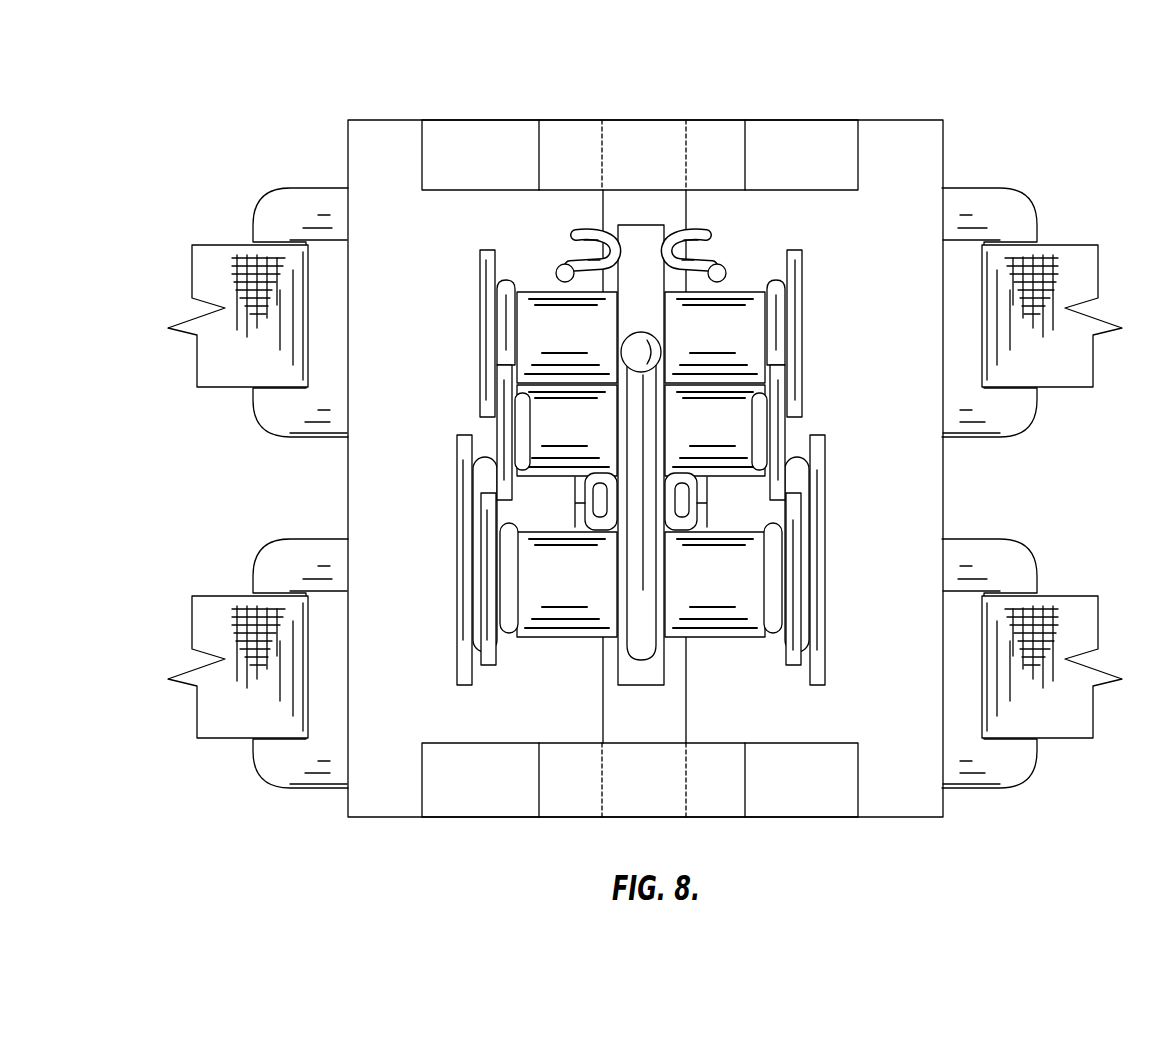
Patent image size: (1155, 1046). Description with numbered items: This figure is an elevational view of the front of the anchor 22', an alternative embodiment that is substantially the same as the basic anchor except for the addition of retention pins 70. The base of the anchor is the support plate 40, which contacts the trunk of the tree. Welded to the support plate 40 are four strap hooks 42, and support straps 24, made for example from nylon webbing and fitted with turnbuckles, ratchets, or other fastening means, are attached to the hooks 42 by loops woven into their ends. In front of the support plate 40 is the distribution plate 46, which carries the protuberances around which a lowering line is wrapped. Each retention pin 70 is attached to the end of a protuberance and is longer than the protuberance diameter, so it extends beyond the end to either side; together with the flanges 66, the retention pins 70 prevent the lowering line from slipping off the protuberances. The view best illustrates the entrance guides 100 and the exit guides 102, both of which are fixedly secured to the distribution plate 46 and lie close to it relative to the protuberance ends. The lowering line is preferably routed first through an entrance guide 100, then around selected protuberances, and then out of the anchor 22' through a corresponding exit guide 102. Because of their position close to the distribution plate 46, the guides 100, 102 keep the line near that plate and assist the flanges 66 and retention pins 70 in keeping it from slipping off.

The anchor 22' is at (640, 413).
The support plate 40 is at (392, 157).
The strap hooks 42 is at (1003, 213).
The support straps 24 is at (1083, 272).
The distribution plate 46 is at (640, 683).
The flanges 66 is at (773, 297).
The retention pins 70 is at (800, 316).
The entrance guides 100 is at (562, 246).
The exit guides 102 is at (578, 522).